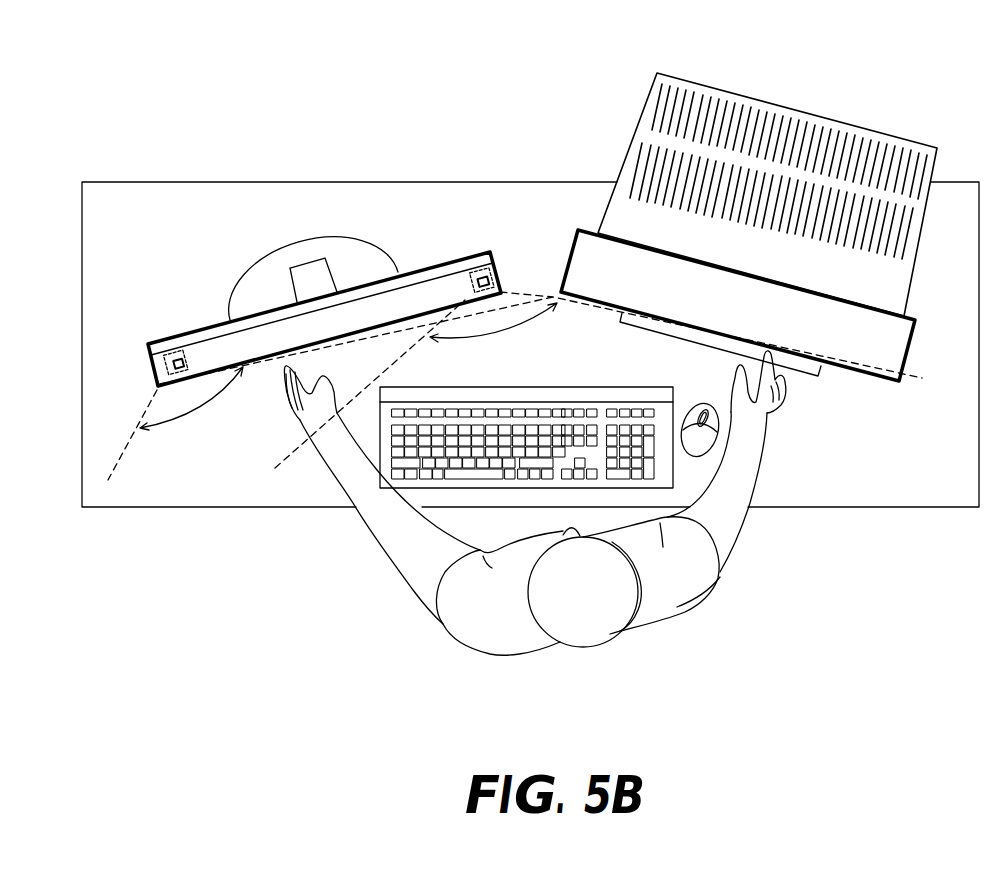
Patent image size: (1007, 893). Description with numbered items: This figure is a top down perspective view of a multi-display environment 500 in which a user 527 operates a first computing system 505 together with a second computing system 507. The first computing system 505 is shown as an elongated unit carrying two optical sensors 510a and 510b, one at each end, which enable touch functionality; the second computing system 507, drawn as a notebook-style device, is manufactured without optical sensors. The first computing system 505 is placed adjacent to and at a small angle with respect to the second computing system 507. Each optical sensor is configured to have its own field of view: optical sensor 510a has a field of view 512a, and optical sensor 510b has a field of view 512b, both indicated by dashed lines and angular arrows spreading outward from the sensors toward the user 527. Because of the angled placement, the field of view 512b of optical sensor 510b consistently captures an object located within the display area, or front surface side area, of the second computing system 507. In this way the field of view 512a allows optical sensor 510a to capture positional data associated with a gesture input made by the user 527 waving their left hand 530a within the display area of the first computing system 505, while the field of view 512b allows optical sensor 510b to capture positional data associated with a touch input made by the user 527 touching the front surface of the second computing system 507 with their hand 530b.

The multi-display environment 500 is at (182, 72).
The first computing system 505 is at (222, 325).
The second computing system 507 is at (575, 235).
The optical sensor 510a is at (163, 352).
The optical sensor 510b is at (468, 278).
The field of view 512a is at (208, 413).
The field of view 512b is at (505, 336).
The user 527 is at (663, 622).
The left hand 530a is at (324, 380).
The hand 530b is at (784, 398).